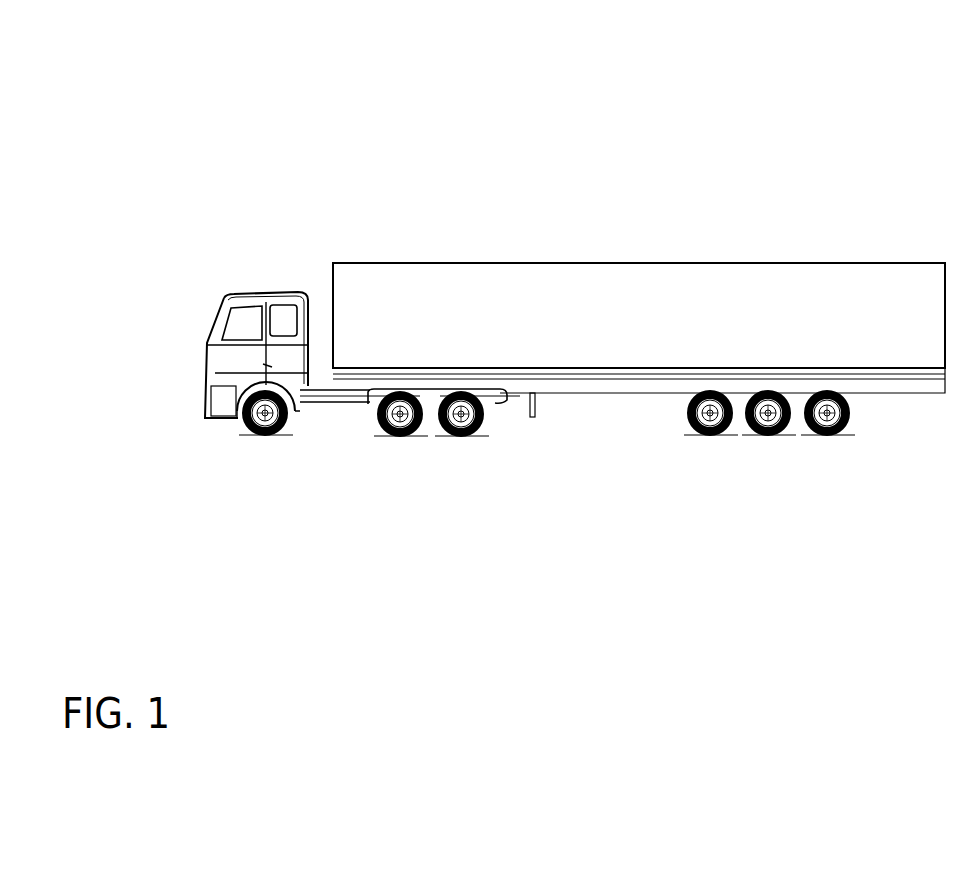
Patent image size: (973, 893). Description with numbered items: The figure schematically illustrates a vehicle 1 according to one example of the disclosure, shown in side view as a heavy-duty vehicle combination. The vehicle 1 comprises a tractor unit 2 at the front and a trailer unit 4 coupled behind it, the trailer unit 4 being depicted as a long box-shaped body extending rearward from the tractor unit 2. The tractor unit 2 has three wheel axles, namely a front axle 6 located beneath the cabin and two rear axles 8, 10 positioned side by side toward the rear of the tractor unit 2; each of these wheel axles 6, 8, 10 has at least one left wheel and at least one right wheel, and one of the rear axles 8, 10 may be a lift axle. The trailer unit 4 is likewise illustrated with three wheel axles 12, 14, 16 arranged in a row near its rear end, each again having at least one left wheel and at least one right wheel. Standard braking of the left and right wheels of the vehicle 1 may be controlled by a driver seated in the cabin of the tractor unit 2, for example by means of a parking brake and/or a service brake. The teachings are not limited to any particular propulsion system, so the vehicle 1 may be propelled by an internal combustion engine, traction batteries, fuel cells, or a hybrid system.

The vehicle 1 is at (222, 130).
The tractor unit 2 is at (256, 296).
The trailer unit 4 is at (629, 261).
The front axle 6 is at (252, 437).
The rear axle 8 is at (393, 437).
The rear axle 10 is at (459, 437).
The wheel axle 12 is at (694, 438).
The wheel axle 14 is at (760, 438).
The wheel axle 16 is at (822, 438).